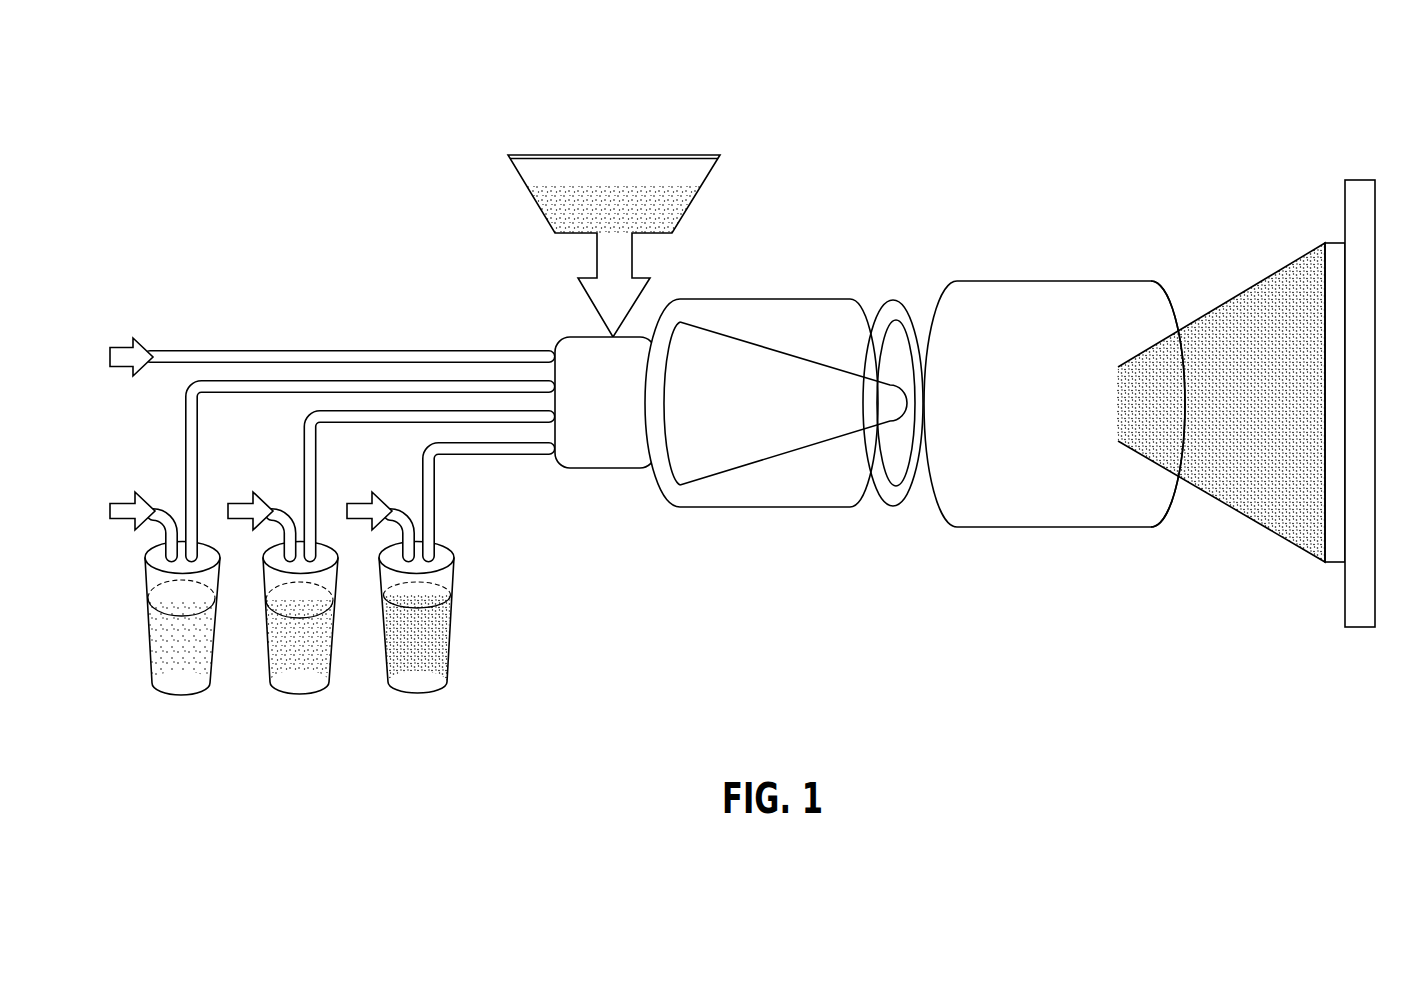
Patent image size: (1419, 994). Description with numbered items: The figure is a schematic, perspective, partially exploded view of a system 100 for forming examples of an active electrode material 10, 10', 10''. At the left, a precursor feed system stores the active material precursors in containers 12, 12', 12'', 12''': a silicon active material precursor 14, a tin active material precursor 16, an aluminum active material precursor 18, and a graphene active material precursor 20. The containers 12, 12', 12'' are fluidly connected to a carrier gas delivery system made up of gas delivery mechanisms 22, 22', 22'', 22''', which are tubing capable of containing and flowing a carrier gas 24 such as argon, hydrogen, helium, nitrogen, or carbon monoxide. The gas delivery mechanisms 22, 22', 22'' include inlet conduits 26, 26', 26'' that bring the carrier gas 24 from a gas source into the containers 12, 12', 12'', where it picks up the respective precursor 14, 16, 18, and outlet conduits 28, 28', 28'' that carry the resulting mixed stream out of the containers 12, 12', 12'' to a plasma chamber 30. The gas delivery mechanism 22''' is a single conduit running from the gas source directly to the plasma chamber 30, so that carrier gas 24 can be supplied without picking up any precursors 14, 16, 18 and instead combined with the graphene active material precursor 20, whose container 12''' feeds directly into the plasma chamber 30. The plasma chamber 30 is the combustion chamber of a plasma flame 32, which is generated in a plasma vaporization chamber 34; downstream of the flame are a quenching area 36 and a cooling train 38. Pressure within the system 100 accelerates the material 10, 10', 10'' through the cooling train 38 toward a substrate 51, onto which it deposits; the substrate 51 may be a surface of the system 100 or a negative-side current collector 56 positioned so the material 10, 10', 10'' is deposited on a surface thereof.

The system 100 is at (1093, 157).
The active electrode material 10 is at (1230, 435).
The active electrode material 10' is at (1230, 435).
The active electrode material 10'' is at (1230, 435).
The container 12 is at (157, 660).
The container 12' is at (341, 660).
The container 12'' is at (469, 618).
The container 12''' is at (630, 202).
The silicon active material precursor 14 is at (187, 670).
The tin active material precursor 16 is at (298, 670).
The aluminum active material precursor 18 is at (415, 655).
The graphene active material precursor 20 is at (647, 208).
The gas delivery mechanism 22 is at (141, 481).
The gas delivery mechanism 22' is at (260, 494).
The gas delivery mechanism 22'' is at (485, 532).
The gas delivery mechanism 22''' is at (349, 309).
The carrier gas 24 is at (122, 355).
The inlet conduit 26 is at (141, 481).
The inlet conduit 26' is at (260, 494).
The inlet conduit 26'' is at (485, 532).
The outlet conduit 28 is at (371, 472).
The outlet conduit 28' is at (429, 487).
The outlet conduit 28'' is at (505, 503).
The plasma chamber 30 is at (622, 448).
The plasma flame 32 is at (757, 442).
The plasma vaporization chamber 34 is at (803, 298).
The quenching area 36 is at (902, 493).
The cooling train 38 is at (1037, 496).
The substrate 51 is at (1381, 359).
The negative-side current collector 56 is at (1358, 195).